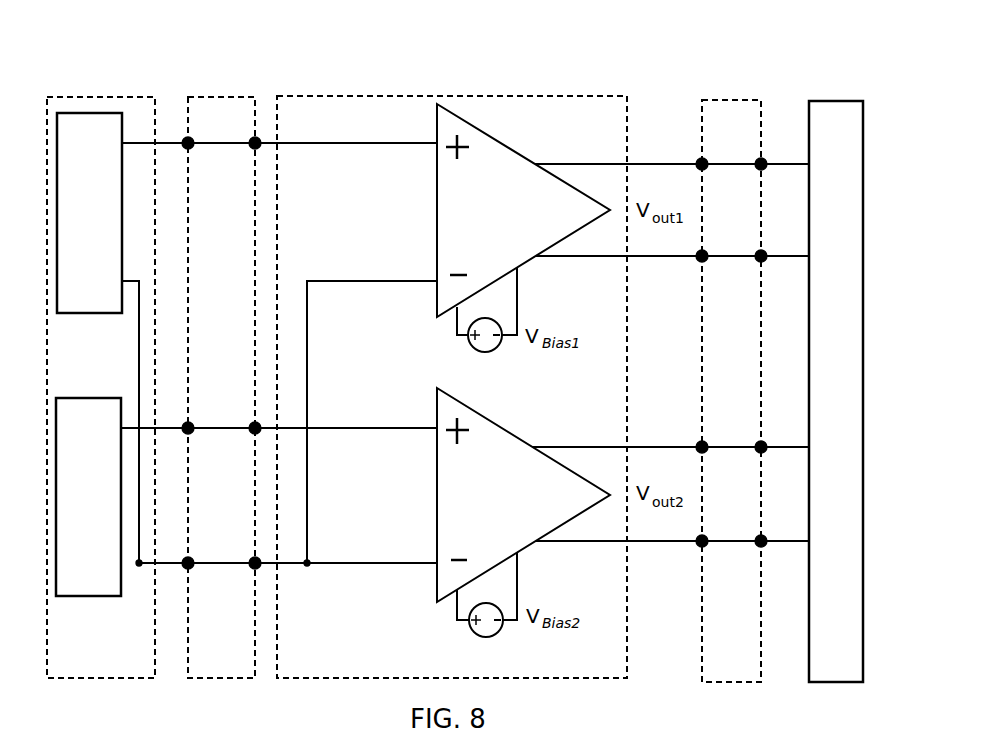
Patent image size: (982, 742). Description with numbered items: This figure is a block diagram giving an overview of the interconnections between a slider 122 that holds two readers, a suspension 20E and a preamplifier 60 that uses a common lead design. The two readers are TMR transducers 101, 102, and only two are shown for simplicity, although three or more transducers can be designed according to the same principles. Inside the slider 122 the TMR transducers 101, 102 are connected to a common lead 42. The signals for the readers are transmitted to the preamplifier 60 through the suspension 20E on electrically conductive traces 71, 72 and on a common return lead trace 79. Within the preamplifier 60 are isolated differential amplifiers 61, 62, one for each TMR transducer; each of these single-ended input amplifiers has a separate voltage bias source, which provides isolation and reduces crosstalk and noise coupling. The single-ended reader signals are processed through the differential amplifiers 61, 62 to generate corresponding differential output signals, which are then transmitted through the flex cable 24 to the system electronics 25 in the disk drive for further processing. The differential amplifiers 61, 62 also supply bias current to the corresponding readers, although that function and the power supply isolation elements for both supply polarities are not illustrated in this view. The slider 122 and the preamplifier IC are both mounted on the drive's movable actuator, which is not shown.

The slider 122 is at (80, 95).
The suspension 20E is at (202, 95).
The preamplifier 60 is at (377, 95).
The flex cable 24 is at (717, 97).
The system electronics 25 is at (823, 99).
The TMR transducer 101 is at (89, 228).
The TMR transducer 102 is at (89, 513).
The electrically conductive trace 71 is at (220, 148).
The electrically conductive trace 72 is at (220, 433).
The common lead 42 is at (137, 369).
The common return lead trace 79 is at (332, 568).
The differential amplifier 61 is at (437, 215).
The differential amplifier 62 is at (437, 517).